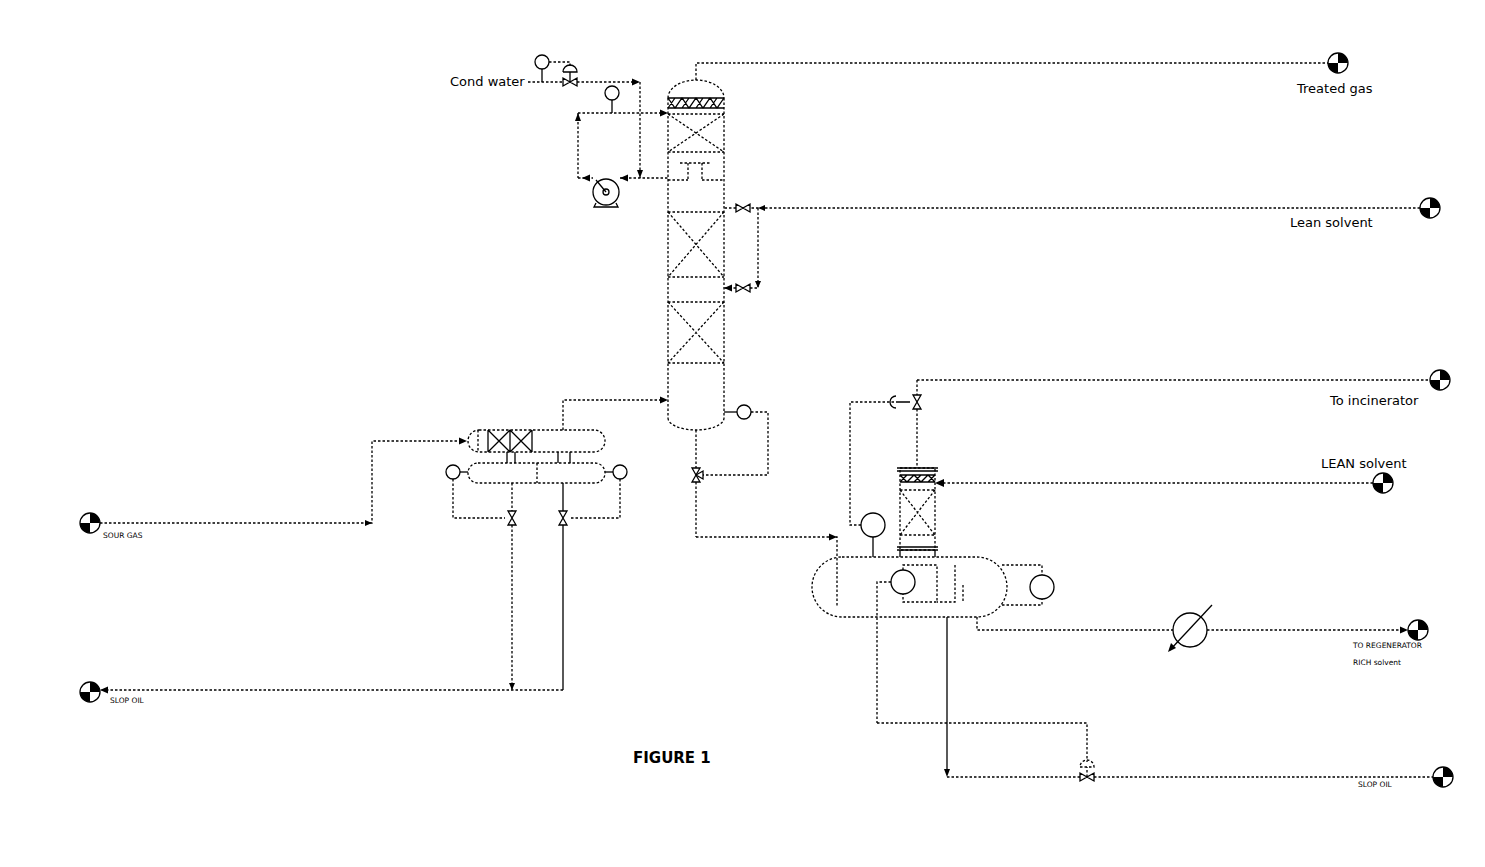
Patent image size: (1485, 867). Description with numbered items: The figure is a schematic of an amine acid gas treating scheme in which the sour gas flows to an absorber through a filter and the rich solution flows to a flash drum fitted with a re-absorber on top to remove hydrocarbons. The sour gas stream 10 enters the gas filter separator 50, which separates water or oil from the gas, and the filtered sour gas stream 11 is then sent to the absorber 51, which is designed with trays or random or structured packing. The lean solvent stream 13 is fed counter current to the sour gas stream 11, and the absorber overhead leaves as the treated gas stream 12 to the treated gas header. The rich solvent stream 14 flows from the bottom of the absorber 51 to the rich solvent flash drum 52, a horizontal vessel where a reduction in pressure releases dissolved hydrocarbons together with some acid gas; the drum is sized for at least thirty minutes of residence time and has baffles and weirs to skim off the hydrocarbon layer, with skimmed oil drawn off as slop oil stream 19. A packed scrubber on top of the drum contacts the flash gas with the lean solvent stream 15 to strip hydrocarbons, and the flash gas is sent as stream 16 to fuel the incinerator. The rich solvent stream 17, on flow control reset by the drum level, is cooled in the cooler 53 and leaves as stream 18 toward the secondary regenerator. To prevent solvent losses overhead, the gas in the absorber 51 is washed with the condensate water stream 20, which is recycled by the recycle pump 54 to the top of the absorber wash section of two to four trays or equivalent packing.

The sour gas stream 10 is at (407, 441).
The sour gas stream after filtration 11 is at (611, 400).
The treated gas line 12 is at (815, 63).
The lean solvent stream 13 is at (845, 208).
The rich solvent stream 14 is at (741, 537).
The lean solvent line to flash drum scrubber 15 is at (1178, 483).
The flash gas stream to incinerator 16 is at (1152, 380).
The rich solvent stream 17 is at (1100, 630).
The cooled rich solvent stream 18 is at (1247, 630).
The slop oil line 19 is at (1193, 777).
The condensate water stream 20 is at (617, 82).
The gas filter separator 50 is at (513, 430).
The absorber 51 is at (668, 213).
The rich solvent flash drum 52 is at (811, 583).
The cooler 53 is at (1179, 617).
The recycle pump 54 is at (592, 200).